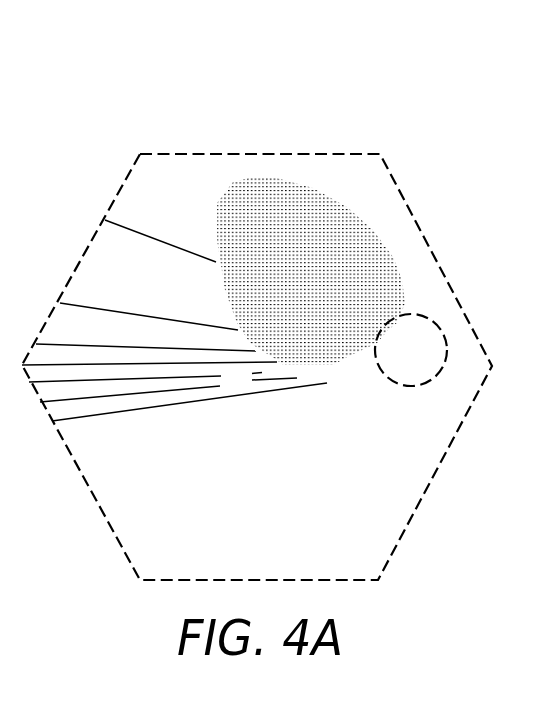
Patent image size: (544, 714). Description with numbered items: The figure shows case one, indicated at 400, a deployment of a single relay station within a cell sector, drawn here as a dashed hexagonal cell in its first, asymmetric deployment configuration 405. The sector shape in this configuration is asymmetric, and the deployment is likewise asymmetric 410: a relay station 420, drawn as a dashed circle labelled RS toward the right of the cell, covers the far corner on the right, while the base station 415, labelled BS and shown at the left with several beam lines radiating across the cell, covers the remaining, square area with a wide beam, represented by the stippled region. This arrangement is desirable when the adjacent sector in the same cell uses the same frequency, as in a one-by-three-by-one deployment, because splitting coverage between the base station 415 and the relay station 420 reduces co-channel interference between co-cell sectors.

The case 1 deployment with one relay station 400 is at (495, 47).
The asymmetric deployment configuration 405 is at (243, 104).
The asymmetric configuration coverage 410 is at (230, 202).
The base station 415 is at (238, 394).
The relay station 420 is at (413, 387).